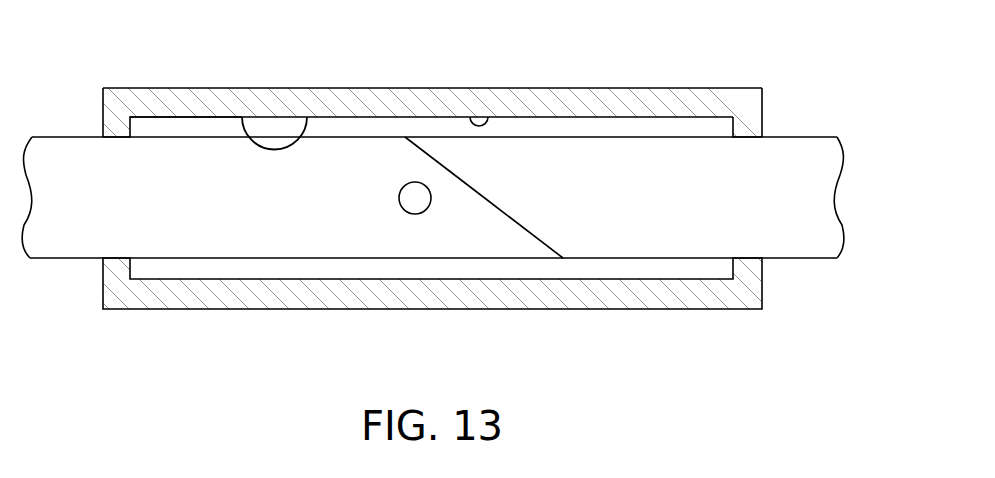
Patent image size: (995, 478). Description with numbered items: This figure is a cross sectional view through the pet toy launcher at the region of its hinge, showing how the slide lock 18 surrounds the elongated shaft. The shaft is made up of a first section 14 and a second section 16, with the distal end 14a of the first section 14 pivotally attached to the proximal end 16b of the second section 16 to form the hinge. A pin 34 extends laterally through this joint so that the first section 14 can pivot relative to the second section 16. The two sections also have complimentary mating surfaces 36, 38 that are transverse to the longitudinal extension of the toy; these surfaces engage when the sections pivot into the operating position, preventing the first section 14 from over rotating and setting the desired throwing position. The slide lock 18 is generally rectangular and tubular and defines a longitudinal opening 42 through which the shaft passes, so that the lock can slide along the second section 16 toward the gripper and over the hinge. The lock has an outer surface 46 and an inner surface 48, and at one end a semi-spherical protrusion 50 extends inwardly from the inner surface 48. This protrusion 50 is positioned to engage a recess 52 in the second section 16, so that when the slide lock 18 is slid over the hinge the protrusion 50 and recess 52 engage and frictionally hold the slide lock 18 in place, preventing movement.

The first section 14 is at (808, 258).
The distal end 14a is at (520, 175).
The second section 16 is at (344, 137).
The proximal end 16b is at (382, 258).
The slide lock 18 is at (613, 88).
The pin 34 is at (415, 214).
The mating surface 36 is at (448, 168).
The mating surface 38 is at (512, 222).
The longitudinal opening 42 is at (762, 137).
The outer surface 46 is at (712, 88).
The inner surface 48 is at (470, 117).
The protrusion 50 is at (242, 126).
The recess 52 is at (266, 152).